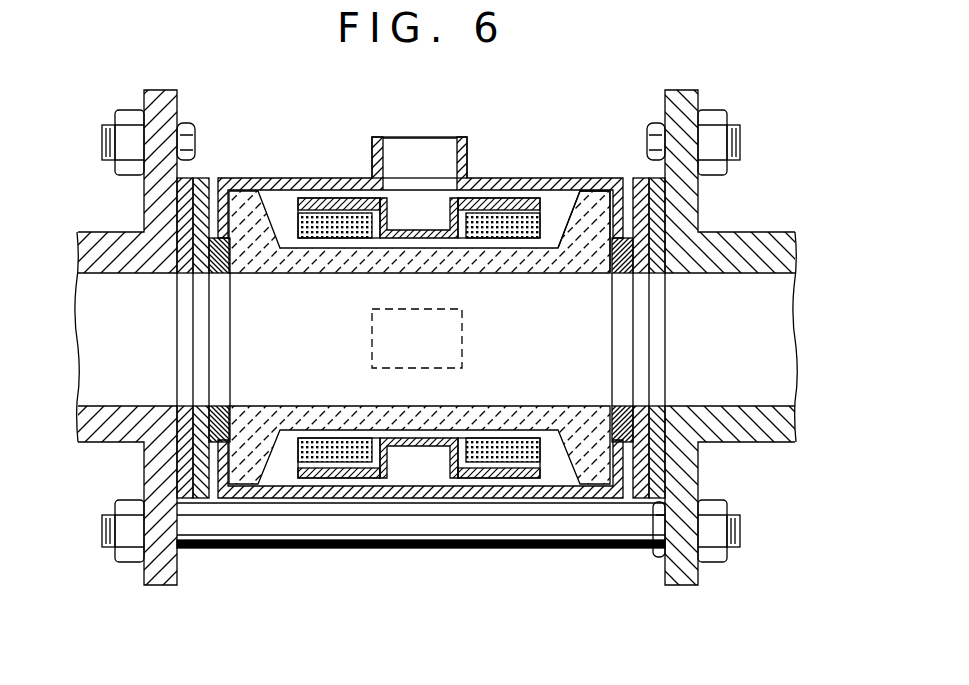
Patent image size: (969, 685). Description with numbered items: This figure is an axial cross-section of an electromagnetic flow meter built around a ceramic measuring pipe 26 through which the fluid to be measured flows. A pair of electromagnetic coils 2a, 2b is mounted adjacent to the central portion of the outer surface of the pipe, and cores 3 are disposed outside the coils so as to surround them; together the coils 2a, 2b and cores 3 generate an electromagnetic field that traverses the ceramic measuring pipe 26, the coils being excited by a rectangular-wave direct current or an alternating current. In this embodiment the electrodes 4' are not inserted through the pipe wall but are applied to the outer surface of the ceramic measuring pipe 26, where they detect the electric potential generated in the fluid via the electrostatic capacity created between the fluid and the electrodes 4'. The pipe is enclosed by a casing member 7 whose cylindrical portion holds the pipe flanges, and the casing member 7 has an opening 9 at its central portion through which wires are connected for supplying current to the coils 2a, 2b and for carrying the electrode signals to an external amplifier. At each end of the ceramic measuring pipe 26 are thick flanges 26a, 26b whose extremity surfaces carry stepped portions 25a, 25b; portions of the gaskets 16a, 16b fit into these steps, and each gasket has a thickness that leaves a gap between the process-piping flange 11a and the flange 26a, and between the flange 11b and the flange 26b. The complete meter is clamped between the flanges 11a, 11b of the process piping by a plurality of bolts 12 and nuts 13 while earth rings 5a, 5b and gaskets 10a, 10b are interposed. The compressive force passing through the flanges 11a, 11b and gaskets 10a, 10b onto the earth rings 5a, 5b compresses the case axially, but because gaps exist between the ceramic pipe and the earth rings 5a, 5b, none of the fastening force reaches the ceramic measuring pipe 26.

The flange of the process piping 11a is at (158, 90).
The flange of the process piping 11b is at (682, 90).
The earth ring 5a is at (203, 177).
The earth ring 5b is at (640, 177).
The gasket 16a is at (224, 274).
The gasket 16b is at (612, 274).
The stepped portion 25a is at (226, 406).
The stepped portion 25b is at (614, 406).
The casing member 7 is at (540, 178).
The opening 9 is at (392, 140).
The ceramic measuring pipe 26 is at (344, 274).
The flange of the ceramic measuring pipe 26a is at (252, 208).
The flange of the ceramic measuring pipe 26b is at (593, 208).
The electromagnetic coil 2a is at (332, 213).
The electromagnetic coil 2b is at (340, 468).
The core 3 is at (428, 230).
The electrode 4' is at (447, 338).
The gasket 10a is at (183, 548).
The gasket 10b is at (657, 547).
The bolt 12 is at (480, 539).
The nut 13 is at (132, 564).